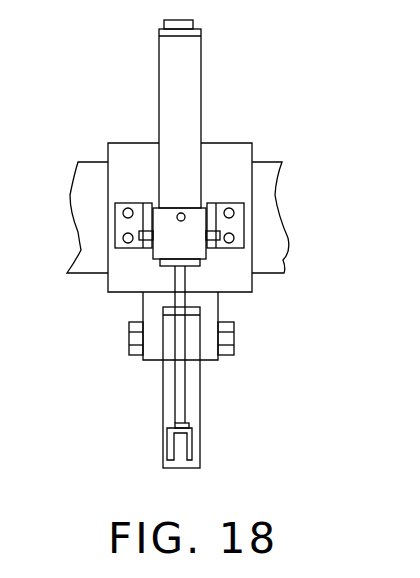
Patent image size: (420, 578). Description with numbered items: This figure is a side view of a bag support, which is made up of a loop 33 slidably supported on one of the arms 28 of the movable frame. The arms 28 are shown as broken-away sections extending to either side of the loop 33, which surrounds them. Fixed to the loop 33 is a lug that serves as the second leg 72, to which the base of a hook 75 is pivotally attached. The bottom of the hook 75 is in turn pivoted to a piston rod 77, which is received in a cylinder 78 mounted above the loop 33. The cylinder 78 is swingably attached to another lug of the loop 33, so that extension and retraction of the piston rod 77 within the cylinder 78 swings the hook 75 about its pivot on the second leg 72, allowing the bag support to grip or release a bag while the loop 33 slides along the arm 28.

The cylinder 78 is at (192, 108).
The loop 33 is at (252, 220).
The arms 28 is at (85, 251).
The second leg 72 is at (218, 305).
The hook 75 is at (162, 387).
The piston rod 77 is at (180, 398).